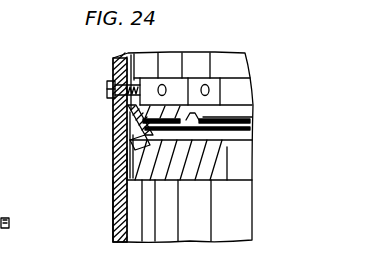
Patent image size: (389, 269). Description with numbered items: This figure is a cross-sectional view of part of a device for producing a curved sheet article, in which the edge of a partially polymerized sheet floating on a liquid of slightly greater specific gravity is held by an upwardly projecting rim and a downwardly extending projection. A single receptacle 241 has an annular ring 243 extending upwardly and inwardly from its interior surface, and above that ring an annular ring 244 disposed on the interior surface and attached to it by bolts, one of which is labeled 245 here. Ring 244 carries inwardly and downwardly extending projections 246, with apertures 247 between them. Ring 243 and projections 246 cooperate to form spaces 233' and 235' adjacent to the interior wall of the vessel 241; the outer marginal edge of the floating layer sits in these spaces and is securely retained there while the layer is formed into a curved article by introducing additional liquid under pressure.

The receptacle 241 is at (75, 88).
The bolt head 245 is at (111, 93).
The annular ring 244 is at (118, 100).
The space 235' is at (100, 132).
The projections 246 is at (113, 154).
The space 233' is at (87, 175).
The annular ring 243 is at (113, 183).
The apertures 247 is at (200, 138).